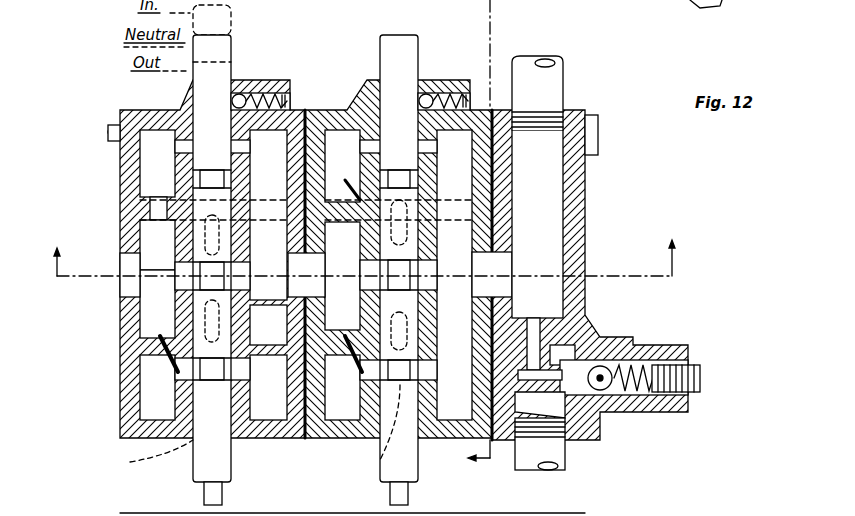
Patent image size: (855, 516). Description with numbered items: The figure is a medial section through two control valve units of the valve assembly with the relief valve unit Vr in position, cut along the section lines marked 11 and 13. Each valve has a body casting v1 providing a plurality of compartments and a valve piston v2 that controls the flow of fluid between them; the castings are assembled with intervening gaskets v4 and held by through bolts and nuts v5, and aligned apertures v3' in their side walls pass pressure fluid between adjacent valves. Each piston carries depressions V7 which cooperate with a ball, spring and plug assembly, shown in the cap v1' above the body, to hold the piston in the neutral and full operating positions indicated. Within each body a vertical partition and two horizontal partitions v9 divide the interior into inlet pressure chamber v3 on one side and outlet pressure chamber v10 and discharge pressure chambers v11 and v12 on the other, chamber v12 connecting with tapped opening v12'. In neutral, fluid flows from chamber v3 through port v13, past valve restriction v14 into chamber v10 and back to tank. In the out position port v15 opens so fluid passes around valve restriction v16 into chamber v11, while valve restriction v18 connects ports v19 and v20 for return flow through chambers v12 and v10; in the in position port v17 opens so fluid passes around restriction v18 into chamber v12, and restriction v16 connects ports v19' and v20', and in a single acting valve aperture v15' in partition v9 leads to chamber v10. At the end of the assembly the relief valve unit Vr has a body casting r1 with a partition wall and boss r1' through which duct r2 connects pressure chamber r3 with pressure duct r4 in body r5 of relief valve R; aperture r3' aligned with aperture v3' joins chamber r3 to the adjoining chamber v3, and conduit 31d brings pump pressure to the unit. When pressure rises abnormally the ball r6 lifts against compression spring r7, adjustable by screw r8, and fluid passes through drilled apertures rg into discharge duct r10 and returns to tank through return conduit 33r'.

The body casting v1 is at (288, 282).
The valve piston v2 is at (232, 52).
The inlet pressure chamber v3 is at (355, 323).
The aligned apertures v3' is at (273, 286).
The gaskets v4 is at (482, 110).
The through bolts and nuts v5 is at (112, 125).
The depressions V7 is at (232, 100).
The horizontal partitions v9 is at (150, 215).
The outlet pressure chamber v10 is at (155, 245).
The discharge pressure chamber v11 is at (140, 165).
The discharge pressure chamber v12 is at (208, 392).
The tapped opening v12' is at (242, 429).
The port v13 is at (440, 258).
The valve restriction v14 is at (210, 275).
The port v15 is at (306, 275).
The aperture v15' is at (113, 192).
The valve restriction v16 is at (438, 183).
The port v17 is at (180, 400).
The valve restriction v18 is at (438, 364).
The port v19 is at (210, 293).
The port v19' is at (344, 185).
The port v20 is at (306, 275).
The port v20' is at (371, 493).
The housing cap v1' is at (371, 69).
The body casting r1 is at (590, 275).
The boss r1' is at (601, 289).
The duct r2 is at (533, 330).
The pressure chamber r3 is at (537, 224).
The aperture r3' is at (507, 272).
The pressure duct r4 is at (585, 345).
The body r5 is at (630, 340).
The ball r6 is at (608, 390).
The compression spring r7 is at (652, 395).
The screw r8 is at (700, 385).
The drilled apertures rg is at (578, 360).
The discharge duct r10 is at (560, 420).
The relief valve R is at (700, 340).
The relief valve unit Vr is at (600, 252).
The conduit 31d is at (565, 77).
The return conduit 33r' is at (559, 458).
The section line 11 is at (469, 234).
The section line 13 is at (364, 253).